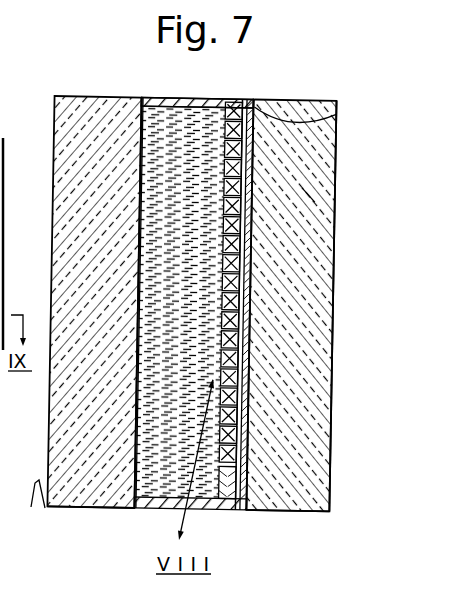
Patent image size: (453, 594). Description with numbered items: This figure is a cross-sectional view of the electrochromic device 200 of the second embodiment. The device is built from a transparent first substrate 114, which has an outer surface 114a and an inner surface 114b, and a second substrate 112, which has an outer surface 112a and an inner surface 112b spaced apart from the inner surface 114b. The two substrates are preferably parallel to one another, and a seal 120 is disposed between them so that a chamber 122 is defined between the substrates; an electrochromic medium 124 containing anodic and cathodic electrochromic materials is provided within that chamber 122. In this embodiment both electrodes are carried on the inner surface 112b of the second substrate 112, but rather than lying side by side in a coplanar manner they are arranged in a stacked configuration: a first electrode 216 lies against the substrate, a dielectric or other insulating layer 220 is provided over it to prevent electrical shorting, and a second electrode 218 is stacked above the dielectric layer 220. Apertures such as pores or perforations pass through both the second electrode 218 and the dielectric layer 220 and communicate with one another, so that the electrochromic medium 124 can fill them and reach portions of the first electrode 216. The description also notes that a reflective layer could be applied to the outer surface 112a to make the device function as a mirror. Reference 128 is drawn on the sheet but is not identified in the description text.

The second substrate 112 is at (322, 243).
The outer surface of substrate 112 112a is at (329, 502).
The inner surface of second substrate 112b is at (248, 506).
The transparent first substrate 114 is at (57, 143).
The outer surface of first substrate 114a is at (71, 525).
The inner surface of first substrate 114b is at (75, 303).
The seal 120 is at (144, 98).
The chamber 122 is at (157, 489).
The electrochromic medium 124 is at (190, 102).
The transparent conductive layer 128 is at (148, 200).
The electrochromic device 200 is at (309, 75).
The first electrode 216 is at (336, 117).
The second electrode 218 is at (254, 100).
The dielectric layer 220 is at (314, 200).